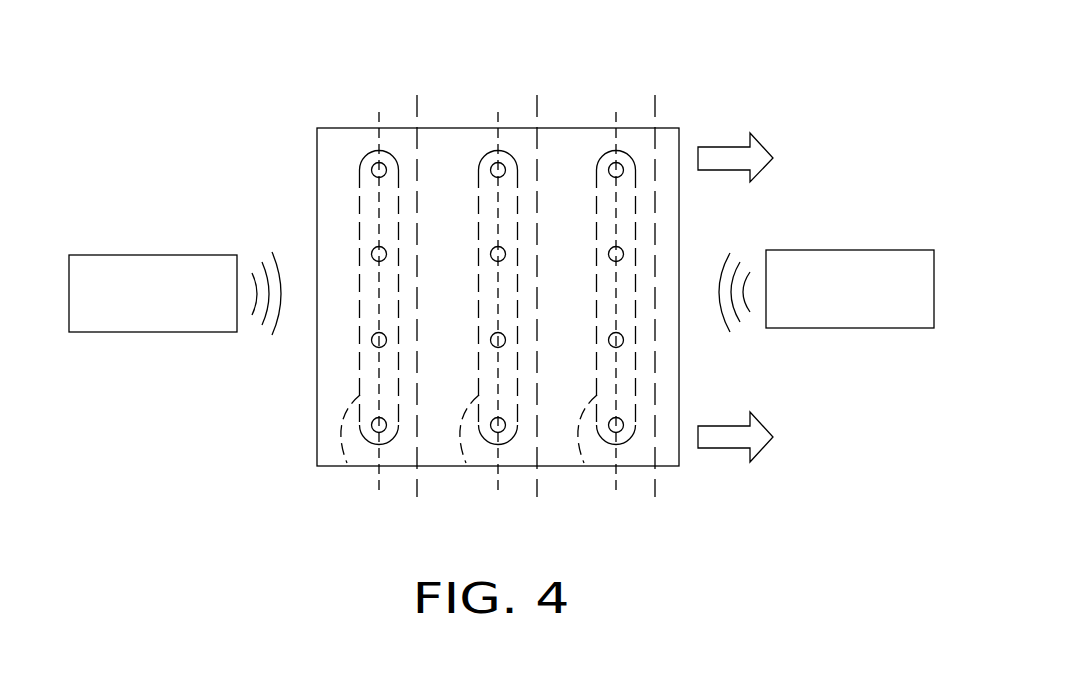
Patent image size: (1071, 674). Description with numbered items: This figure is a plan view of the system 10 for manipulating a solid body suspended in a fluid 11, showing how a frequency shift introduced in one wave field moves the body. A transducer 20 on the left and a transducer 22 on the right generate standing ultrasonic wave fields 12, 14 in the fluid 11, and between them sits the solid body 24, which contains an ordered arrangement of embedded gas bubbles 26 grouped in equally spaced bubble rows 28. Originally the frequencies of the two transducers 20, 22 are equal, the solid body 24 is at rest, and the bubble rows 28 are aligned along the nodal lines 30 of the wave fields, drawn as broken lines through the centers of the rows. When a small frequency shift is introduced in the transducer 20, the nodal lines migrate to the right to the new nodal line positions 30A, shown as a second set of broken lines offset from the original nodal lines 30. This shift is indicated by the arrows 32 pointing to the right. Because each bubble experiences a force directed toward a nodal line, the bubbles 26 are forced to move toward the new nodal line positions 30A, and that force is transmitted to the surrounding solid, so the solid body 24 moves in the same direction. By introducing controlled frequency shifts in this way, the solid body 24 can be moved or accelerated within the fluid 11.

The system for manipulating a solid body suspended in a fluid 10 is at (208, 128).
The fluid 11 is at (283, 378).
The standing ultrasonic wave field 12 is at (278, 268).
The standing ultrasonic wave field 14 is at (720, 318).
The transducer 20 is at (197, 255).
The transducer 22 is at (871, 250).
The solid body 24 is at (641, 98).
The embedded gas bubbles 26 is at (494, 163).
The bubble rows 28 is at (350, 470).
The nodal lines 30 is at (377, 113).
The new nodal line positions 30A is at (418, 473).
The arrows 32 is at (720, 150).